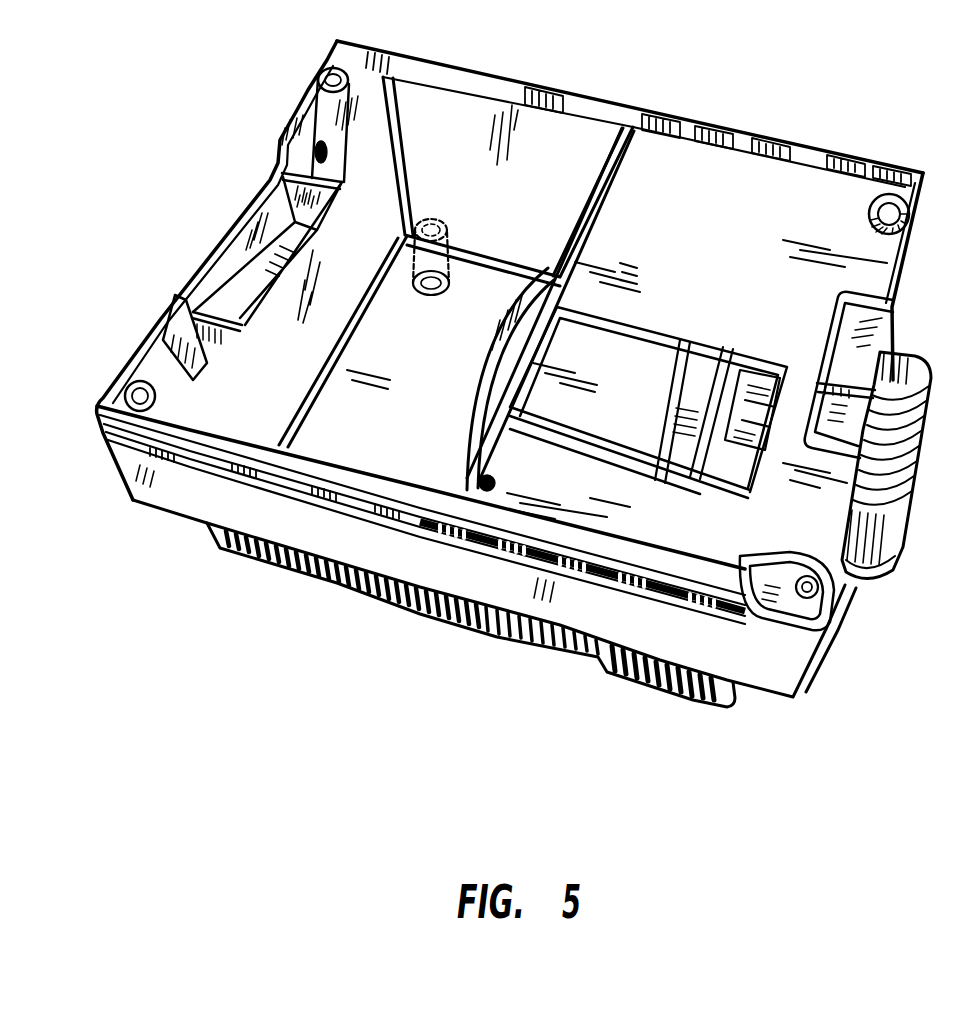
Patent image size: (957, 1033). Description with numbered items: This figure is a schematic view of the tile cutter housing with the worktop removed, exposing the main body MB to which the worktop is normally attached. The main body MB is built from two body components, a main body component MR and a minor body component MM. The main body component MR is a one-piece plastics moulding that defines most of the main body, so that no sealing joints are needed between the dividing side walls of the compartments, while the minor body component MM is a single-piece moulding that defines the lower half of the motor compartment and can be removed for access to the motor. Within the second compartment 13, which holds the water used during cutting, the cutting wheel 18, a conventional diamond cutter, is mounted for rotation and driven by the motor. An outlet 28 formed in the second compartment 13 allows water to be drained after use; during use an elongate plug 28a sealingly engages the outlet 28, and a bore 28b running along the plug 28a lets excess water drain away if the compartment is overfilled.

The second compartment 13 is at (466, 168).
The outlet 28 is at (437, 261).
The plug 28a is at (447, 272).
The bore 28b is at (456, 236).
The cutting wheel 18 is at (493, 347).
The main body MB is at (494, 626).
The main body component MR is at (457, 577).
The minor body component MM is at (687, 687).